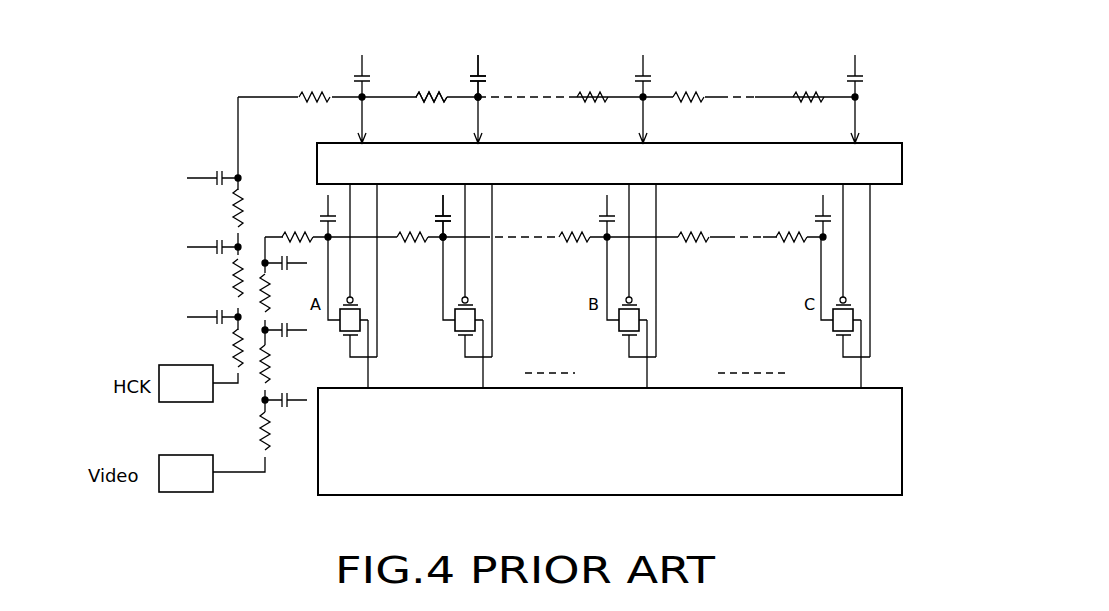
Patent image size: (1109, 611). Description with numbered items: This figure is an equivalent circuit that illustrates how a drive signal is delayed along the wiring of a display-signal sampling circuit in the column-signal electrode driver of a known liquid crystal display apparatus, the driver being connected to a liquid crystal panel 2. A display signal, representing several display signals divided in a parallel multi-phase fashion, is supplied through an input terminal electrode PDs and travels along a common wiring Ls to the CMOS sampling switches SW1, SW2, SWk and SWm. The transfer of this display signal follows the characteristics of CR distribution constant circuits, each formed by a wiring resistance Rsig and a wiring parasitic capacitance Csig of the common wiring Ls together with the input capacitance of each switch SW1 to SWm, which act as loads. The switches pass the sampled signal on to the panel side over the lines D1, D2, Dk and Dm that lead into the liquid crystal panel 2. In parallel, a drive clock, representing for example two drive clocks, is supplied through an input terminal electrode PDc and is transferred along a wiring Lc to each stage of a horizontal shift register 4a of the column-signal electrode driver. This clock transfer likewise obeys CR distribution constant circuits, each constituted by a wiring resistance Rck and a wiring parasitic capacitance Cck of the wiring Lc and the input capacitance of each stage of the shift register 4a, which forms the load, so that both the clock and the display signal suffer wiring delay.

The liquid crystal panel 2 is at (845, 495).
The horizontal shift register 4a is at (883, 142).
The wiring Lc is at (750, 90).
The common wiring Ls is at (737, 248).
The wiring resistance Rck is at (428, 83).
The wiring parasitic capacitance Cck is at (497, 77).
The wiring resistance Rsig is at (407, 252).
The wiring parasitic capacitance Csig is at (418, 215).
The CMOS sampling switch SW1 is at (340, 274).
The CMOS sampling switch SW2 is at (453, 274).
The CMOS sampling switch SWk is at (618, 274).
The CMOS sampling switch SWm is at (831, 274).
The data line 1 D1 is at (382, 354).
The data line 2 D2 is at (497, 354).
The data line k Dk is at (660, 354).
The data line m Dm is at (877, 354).
The input terminal electrode PDc is at (186, 383).
The input terminal electrode PDs is at (186, 473).